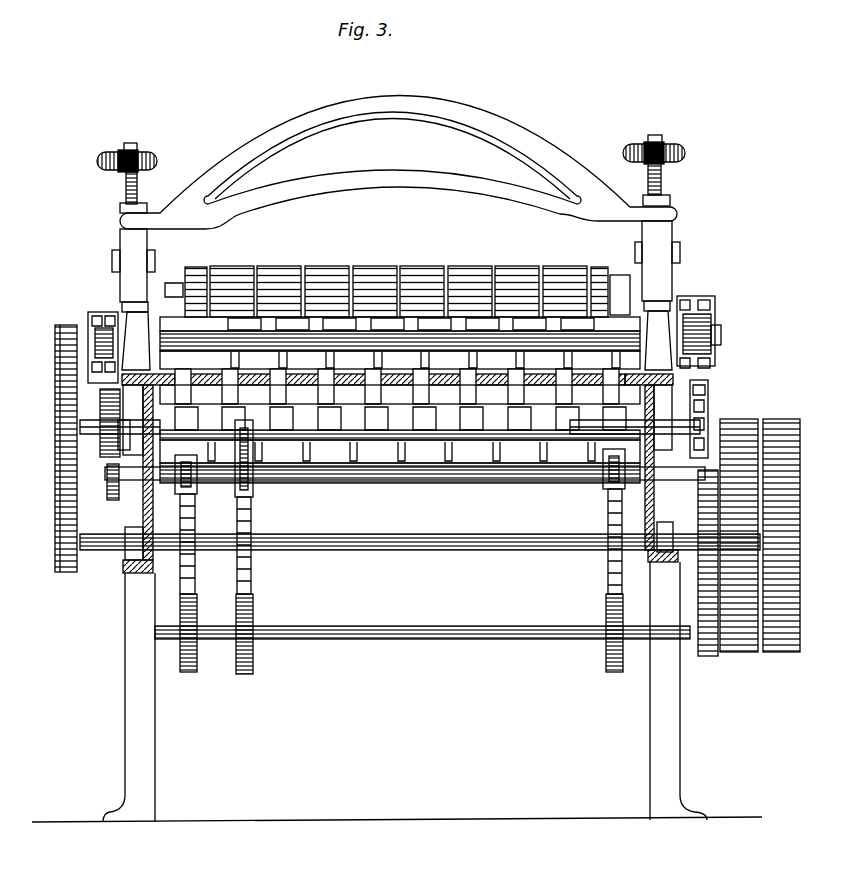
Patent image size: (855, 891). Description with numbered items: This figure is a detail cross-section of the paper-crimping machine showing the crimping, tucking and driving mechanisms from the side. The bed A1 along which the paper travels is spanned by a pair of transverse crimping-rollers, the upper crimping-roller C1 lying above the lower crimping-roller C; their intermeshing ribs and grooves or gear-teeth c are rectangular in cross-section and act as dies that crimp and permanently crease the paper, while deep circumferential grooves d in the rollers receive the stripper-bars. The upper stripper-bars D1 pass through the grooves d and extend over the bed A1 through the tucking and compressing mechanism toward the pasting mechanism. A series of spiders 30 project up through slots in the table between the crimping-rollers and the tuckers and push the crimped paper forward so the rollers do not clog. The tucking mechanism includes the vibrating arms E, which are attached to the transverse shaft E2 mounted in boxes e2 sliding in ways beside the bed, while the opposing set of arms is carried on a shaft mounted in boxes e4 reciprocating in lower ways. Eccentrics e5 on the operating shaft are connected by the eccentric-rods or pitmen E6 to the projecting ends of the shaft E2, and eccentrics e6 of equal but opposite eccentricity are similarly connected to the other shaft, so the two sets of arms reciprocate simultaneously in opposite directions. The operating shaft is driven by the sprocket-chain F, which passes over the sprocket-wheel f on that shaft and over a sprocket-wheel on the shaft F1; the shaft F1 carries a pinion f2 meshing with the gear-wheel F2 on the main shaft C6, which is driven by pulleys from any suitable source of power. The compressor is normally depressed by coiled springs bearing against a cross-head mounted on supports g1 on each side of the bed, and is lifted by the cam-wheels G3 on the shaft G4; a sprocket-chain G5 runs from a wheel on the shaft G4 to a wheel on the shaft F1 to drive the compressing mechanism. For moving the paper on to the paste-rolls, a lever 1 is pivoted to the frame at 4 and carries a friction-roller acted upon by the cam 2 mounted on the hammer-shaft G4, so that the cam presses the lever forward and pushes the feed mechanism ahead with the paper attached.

The vibrating arms E is at (222, 296).
The transverse shaft E2 is at (260, 300).
The upper stripper-bars D1 is at (312, 347).
The bed A1 is at (357, 374).
The circumferential grooves d is at (398, 300).
The ribs and grooves or gear-teeth c is at (462, 280).
The upper crimping-roller C1 is at (508, 298).
The eccentric-rods or pitmen E6 is at (100, 312).
The main shaft C6 is at (430, 550).
The sprocket-wheel f is at (56, 440).
The cam-wheels G3 is at (112, 490).
The cam 2 is at (176, 480).
The lever 1 is at (186, 520).
The sprocket-chain G5 is at (255, 520).
The pivot 4 is at (168, 548).
The shaft (hammer-shaft) G4 is at (345, 475).
The spiders 30 is at (430, 410).
The lower crimping-roller C is at (470, 410).
The shaft F1 is at (445, 627).
The sprocket-chain F is at (190, 660).
The supports g1 is at (252, 650).
The gear-wheel F2 is at (606, 648).
The pinion f2 is at (708, 656).
The eccentrics e5 is at (684, 298).
The boxes e2 is at (702, 300).
The eccentrics e6 is at (712, 320).
The boxes e4 is at (712, 358).